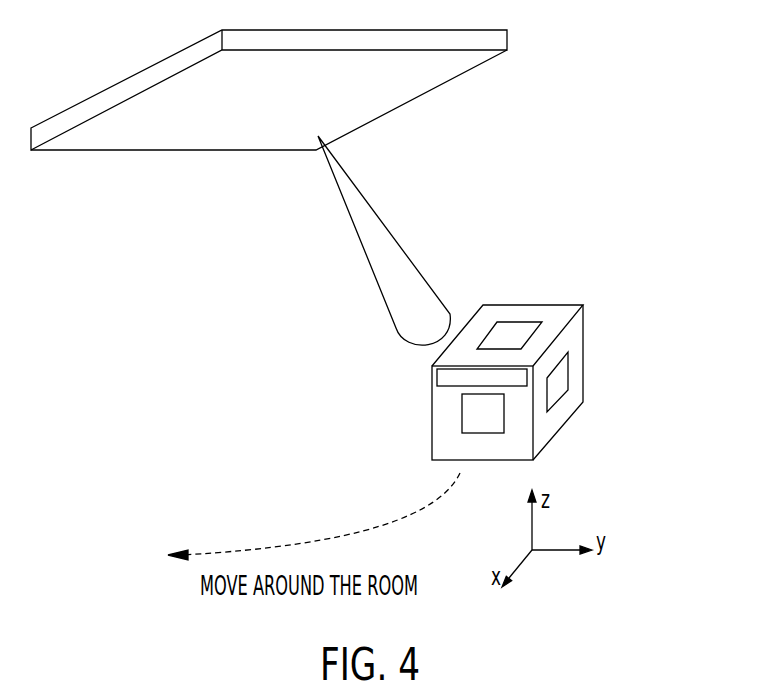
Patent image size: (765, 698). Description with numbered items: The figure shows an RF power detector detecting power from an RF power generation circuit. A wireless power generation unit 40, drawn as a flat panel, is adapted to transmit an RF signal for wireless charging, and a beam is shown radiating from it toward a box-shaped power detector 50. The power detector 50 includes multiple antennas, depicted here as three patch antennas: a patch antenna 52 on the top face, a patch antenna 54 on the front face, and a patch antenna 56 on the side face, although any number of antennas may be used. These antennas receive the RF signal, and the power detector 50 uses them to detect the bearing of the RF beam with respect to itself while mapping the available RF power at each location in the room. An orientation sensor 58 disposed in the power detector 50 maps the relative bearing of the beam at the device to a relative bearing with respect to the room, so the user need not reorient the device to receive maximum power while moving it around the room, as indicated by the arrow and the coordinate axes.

The wireless power generation unit 40 is at (503, 42).
The power detector 50 is at (582, 322).
The patch antenna 52 is at (507, 322).
The patch antenna 54 is at (462, 408).
The patch antenna 56 is at (557, 406).
The orientation sensor 58 is at (437, 378).